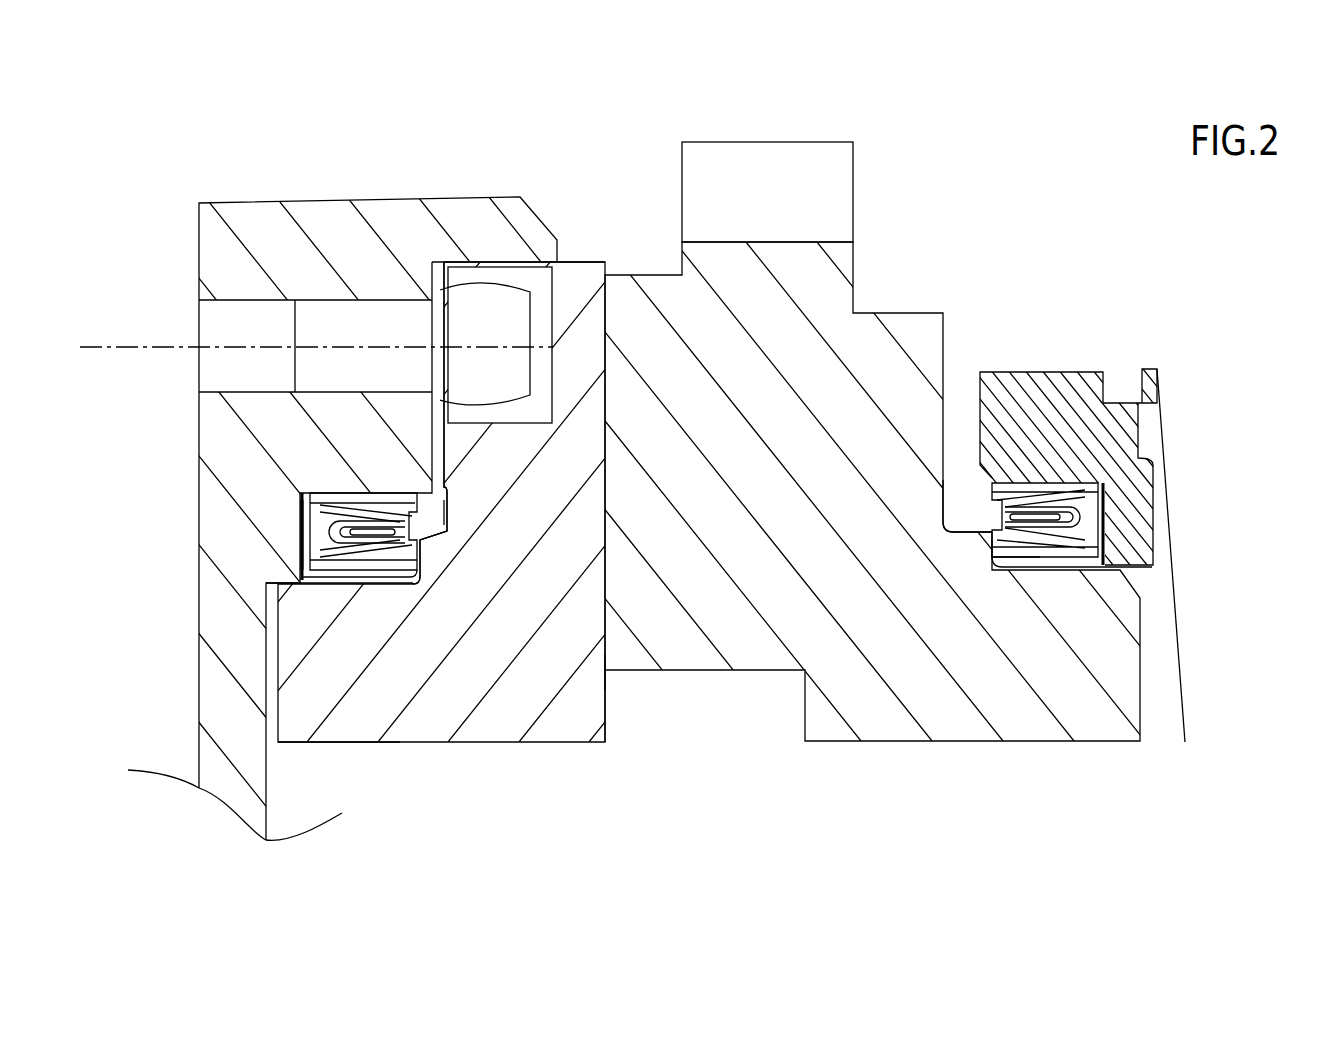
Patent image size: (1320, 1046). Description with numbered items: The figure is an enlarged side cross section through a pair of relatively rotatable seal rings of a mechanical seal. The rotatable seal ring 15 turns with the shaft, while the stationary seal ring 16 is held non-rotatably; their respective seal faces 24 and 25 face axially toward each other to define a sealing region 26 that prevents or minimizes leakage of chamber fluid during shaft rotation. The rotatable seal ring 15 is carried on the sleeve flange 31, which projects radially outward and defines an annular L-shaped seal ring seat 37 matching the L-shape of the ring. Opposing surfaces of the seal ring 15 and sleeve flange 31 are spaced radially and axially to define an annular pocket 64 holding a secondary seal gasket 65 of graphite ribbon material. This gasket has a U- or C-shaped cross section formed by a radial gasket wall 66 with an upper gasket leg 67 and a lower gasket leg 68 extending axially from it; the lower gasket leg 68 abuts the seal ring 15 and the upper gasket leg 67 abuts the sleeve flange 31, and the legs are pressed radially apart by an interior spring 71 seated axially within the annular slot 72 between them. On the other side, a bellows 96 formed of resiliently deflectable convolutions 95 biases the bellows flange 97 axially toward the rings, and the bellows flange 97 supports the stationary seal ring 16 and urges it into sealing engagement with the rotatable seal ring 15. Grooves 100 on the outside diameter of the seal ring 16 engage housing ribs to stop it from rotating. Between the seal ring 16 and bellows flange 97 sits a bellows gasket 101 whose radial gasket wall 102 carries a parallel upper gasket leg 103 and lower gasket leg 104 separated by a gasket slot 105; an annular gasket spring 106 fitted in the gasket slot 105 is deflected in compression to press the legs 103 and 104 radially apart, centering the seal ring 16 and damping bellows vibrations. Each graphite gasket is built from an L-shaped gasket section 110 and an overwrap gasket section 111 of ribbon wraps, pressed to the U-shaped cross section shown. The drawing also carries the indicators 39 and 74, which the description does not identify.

The rotatable seal ring 15 is at (557, 745).
The stationary seal ring 16 is at (715, 676).
The seal face 24 is at (605, 715).
The seal face 25 is at (604, 672).
The sealing region 26 is at (607, 265).
The sleeve flange 31 is at (214, 196).
The seal ring seat 37 is at (366, 797).
The surface 39 is at (265, 812).
The annular pocket 64 is at (448, 512).
The secondary seal gasket 65 is at (290, 561).
The gasket wall 66 is at (300, 540).
The upper gasket leg 67 is at (390, 502).
The lower gasket leg 68 is at (408, 582).
The interior spring 71 is at (340, 502).
The annular slot 72 is at (443, 542).
The retaining lip 74 is at (432, 500).
The convolutions 95 is at (1180, 663).
The bellows 96 is at (1166, 375).
The bellows flange 97 is at (1052, 368).
The grooves 100 is at (777, 155).
The bellows gasket 101 is at (1100, 567).
The gasket wall 102 is at (1100, 527).
The upper gasket leg 103 is at (1008, 487).
The lower gasket leg 104 is at (1033, 567).
The gasket slot 105 is at (975, 515).
The gasket spring 106 is at (1098, 500).
The L-shaped gasket section 110 is at (308, 585).
The overwrap gasket section 111 is at (298, 558).